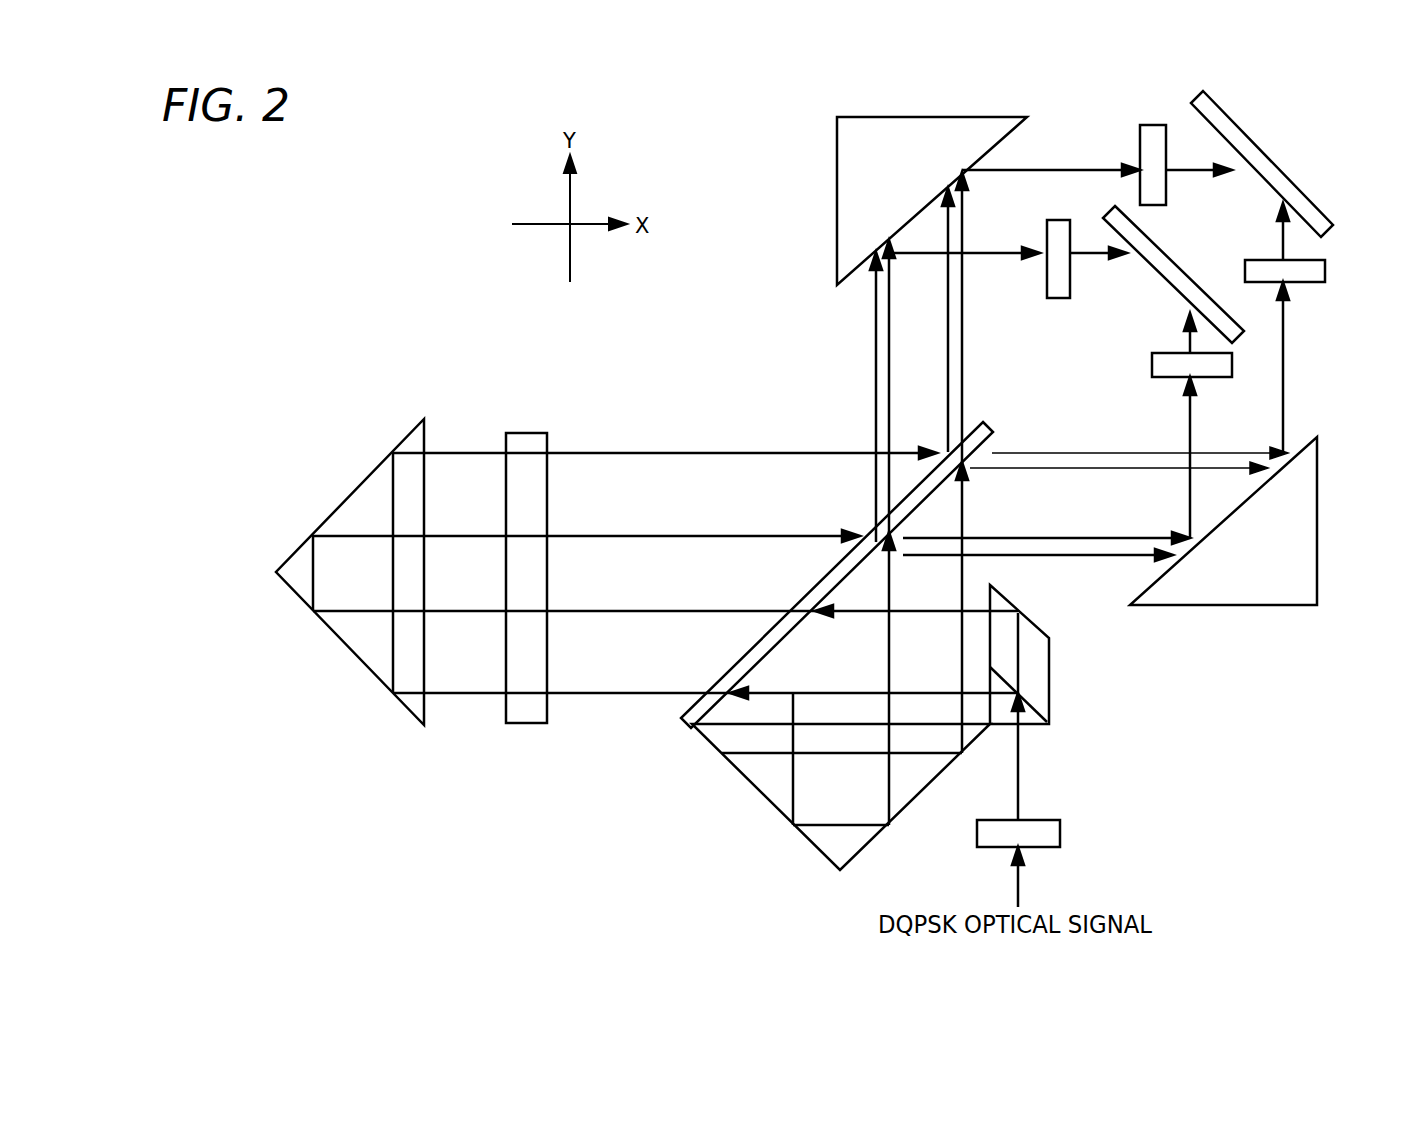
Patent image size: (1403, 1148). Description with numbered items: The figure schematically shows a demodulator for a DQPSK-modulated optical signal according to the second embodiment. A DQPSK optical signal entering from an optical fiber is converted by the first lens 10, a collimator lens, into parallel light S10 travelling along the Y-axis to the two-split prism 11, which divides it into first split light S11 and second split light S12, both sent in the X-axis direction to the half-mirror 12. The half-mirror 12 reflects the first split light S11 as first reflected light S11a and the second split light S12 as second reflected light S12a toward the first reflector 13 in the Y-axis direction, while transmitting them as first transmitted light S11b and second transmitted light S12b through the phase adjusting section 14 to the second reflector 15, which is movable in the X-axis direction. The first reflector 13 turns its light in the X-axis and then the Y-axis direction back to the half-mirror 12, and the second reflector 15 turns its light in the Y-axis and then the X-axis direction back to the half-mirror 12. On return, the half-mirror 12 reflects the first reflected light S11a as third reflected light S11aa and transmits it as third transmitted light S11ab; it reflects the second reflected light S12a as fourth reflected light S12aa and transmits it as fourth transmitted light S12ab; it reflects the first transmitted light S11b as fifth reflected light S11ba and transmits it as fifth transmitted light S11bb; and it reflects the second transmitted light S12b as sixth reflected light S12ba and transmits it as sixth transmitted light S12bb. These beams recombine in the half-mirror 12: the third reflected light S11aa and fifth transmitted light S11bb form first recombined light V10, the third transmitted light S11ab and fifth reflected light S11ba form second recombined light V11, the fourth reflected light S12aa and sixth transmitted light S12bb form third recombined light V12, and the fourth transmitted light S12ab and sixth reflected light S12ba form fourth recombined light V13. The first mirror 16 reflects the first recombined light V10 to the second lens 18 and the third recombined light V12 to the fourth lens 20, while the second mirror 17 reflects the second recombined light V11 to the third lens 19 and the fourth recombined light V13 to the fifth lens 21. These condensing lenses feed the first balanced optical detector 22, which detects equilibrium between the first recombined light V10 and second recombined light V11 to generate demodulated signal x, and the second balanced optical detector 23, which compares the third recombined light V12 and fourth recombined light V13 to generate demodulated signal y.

The first lens 10 is at (1060, 835).
The two-split prism 11 is at (1050, 688).
The half-mirror 12 is at (833, 570).
The first reflector 13 is at (860, 847).
The phase adjusting section 14 is at (529, 725).
The second reflector 15 is at (352, 656).
The first mirror 16 is at (1232, 606).
The second mirror 17 is at (837, 157).
The second lens 18 is at (1325, 272).
The third lens 19 is at (1152, 120).
The fourth lens 20 is at (1152, 366).
The fifth lens 21 is at (1070, 290).
The first balanced optical detector 22 is at (1268, 163).
The second balanced optical detector 23 is at (1177, 268).
The parallel light S10 is at (1018, 782).
The first split light S11 is at (923, 692).
The second split light S12 is at (908, 609).
The first reflected light S11a is at (743, 758).
The second reflected light S12a is at (788, 795).
The first transmitted light S11b is at (605, 693).
The second transmitted light S12b is at (650, 610).
The third reflected light S11aa is at (1040, 430).
The third transmitted light S11ab is at (948, 323).
The fifth reflected light S11ba is at (962, 362).
The fifth transmitted light S11bb is at (1113, 470).
The fourth reflected light S12aa is at (1082, 558).
The fourth transmitted light S12ab is at (876, 325).
The sixth reflected light S12ba is at (889, 375).
The sixth transmitted light S12bb is at (1020, 515).
The first recombined light V10 is at (1283, 370).
The second recombined light V11 is at (1076, 168).
The third recombined light V12 is at (1192, 410).
The fourth recombined light V13 is at (1003, 253).